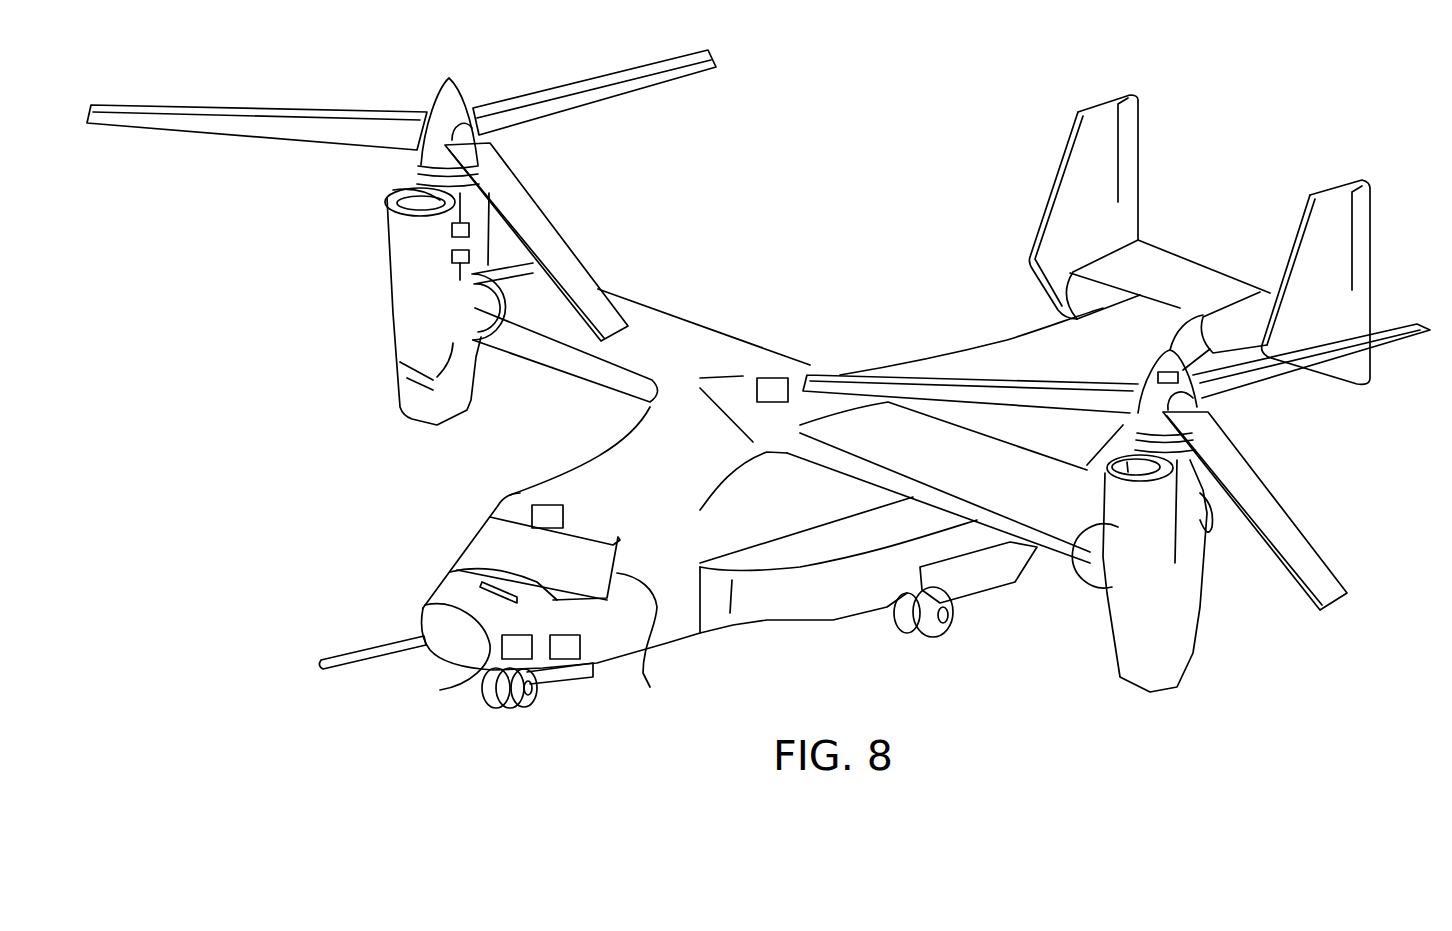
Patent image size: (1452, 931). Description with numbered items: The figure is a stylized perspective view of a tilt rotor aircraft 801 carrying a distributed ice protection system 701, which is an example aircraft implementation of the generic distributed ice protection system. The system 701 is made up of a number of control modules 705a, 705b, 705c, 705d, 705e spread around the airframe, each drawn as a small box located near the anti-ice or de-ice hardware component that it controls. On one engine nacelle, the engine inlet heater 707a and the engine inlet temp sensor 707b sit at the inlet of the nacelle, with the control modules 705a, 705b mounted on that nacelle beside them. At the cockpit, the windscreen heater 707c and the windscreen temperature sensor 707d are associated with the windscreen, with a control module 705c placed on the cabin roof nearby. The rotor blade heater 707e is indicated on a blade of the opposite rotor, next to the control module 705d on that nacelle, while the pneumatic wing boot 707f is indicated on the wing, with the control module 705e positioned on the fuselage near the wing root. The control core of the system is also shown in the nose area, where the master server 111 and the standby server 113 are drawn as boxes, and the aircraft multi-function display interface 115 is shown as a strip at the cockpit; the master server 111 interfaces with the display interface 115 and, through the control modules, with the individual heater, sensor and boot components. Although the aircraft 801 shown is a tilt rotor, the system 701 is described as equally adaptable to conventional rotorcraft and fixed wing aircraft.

The system 701 is at (758, 399).
The control module 705a is at (452, 230).
The control module 705b is at (452, 257).
The control module 705c is at (530, 517).
The control module 705d is at (1167, 370).
The control module 705e is at (768, 378).
The engine inlet heater 707a is at (391, 191).
The engine inlet temp sensor 707b is at (417, 187).
The windscreen heater 707c is at (583, 541).
The windscreen temperature sensor 707d is at (623, 577).
The rotor blade heater 707e is at (1313, 493).
The pneumatic wing boot 707f is at (577, 367).
The master server 111 is at (497, 647).
The standby server 113 is at (563, 660).
The aircraft multi-function display interface 115 is at (467, 602).
The aircraft 801 is at (976, 657).